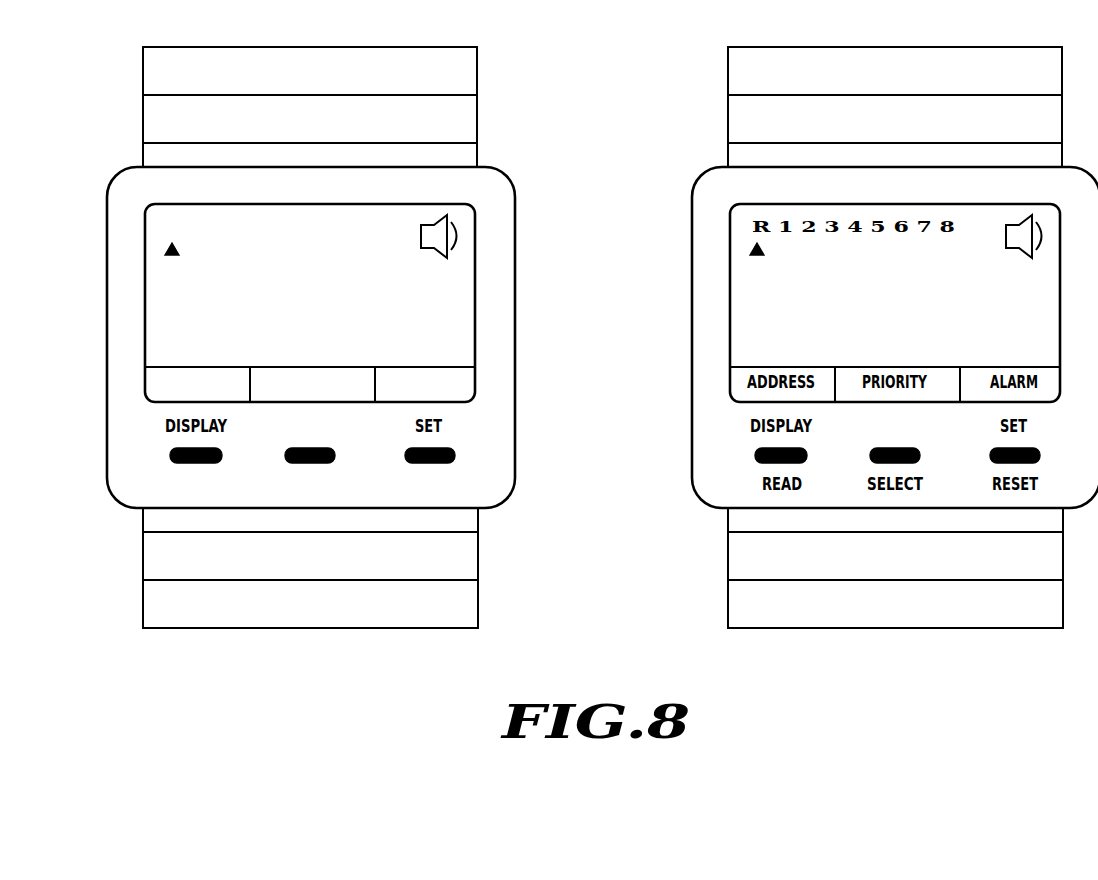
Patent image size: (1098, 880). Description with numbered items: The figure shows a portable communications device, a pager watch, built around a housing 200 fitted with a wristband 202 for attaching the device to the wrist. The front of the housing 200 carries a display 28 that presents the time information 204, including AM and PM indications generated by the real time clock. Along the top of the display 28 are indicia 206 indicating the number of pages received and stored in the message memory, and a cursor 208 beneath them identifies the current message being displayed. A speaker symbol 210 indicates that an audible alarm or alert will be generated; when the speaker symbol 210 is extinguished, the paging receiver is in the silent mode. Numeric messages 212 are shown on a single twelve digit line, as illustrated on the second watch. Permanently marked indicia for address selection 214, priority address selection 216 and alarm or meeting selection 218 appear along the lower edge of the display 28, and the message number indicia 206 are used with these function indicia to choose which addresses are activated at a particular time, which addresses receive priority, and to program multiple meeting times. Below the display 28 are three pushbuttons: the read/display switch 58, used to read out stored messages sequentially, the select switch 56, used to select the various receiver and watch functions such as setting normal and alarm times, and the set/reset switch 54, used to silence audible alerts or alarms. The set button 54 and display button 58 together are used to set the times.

The housing 200 is at (495, 178).
The wristband 202 is at (153, 77).
The time information 204 is at (413, 290).
The indicia 206 is at (160, 227).
The cursor 208 is at (162, 258).
The speaker symbol 210 is at (465, 237).
The numeric messages 212 is at (742, 292).
The address selection indicia 214 is at (157, 400).
The priority address selection indicia 216 is at (352, 378).
The alarm or meeting selection indicia 218 is at (457, 390).
The display 28 is at (162, 348).
The set/reset switch 54 is at (452, 466).
The select switch 56 is at (285, 462).
The read/display switch 58 is at (167, 462).